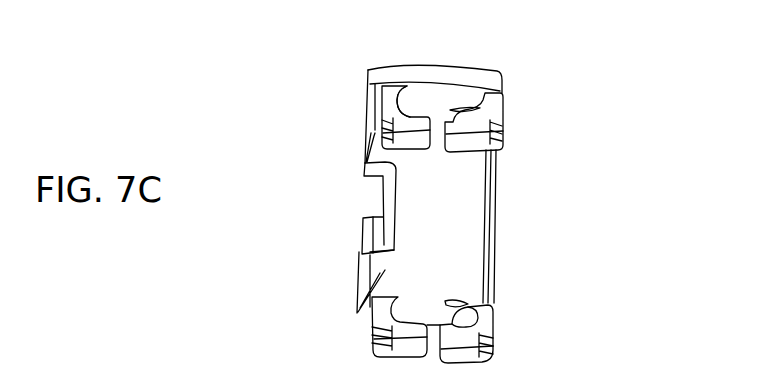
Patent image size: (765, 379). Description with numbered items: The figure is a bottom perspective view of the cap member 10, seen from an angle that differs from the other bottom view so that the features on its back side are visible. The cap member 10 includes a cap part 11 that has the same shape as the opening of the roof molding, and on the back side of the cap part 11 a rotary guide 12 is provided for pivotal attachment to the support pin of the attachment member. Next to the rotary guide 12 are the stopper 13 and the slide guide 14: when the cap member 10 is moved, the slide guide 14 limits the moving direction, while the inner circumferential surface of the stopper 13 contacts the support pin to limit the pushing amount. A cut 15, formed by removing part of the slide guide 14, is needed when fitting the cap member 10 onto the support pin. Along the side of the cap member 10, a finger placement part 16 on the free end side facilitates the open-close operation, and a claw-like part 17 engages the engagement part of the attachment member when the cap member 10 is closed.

The cap member 10 is at (546, 256).
The cap part 11 is at (440, 233).
The rotary guide 12 is at (503, 118).
The stopper 13 is at (367, 88).
The slide guide 14 is at (403, 122).
The cut 15 is at (450, 108).
The finger placement part 16 is at (372, 198).
The claw-like part 17 is at (364, 137).